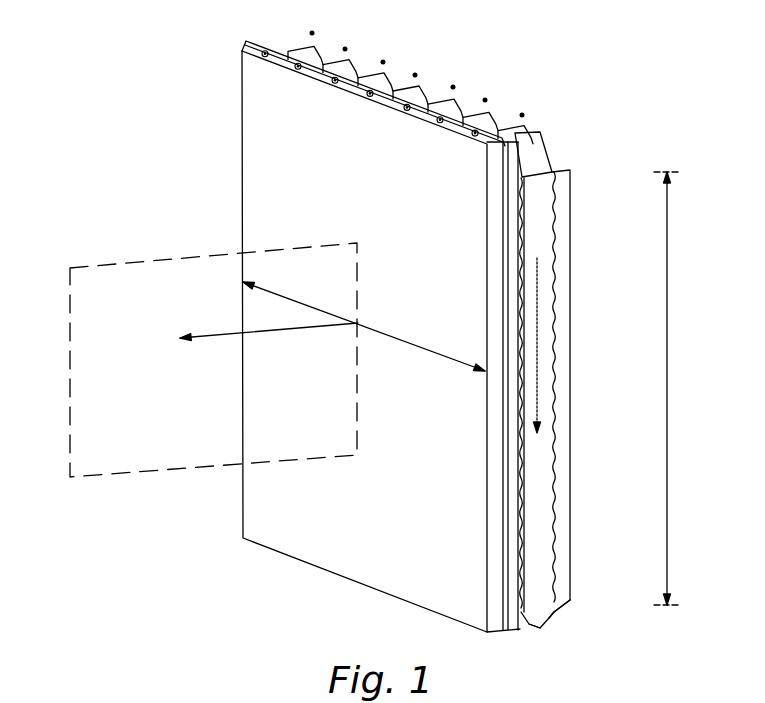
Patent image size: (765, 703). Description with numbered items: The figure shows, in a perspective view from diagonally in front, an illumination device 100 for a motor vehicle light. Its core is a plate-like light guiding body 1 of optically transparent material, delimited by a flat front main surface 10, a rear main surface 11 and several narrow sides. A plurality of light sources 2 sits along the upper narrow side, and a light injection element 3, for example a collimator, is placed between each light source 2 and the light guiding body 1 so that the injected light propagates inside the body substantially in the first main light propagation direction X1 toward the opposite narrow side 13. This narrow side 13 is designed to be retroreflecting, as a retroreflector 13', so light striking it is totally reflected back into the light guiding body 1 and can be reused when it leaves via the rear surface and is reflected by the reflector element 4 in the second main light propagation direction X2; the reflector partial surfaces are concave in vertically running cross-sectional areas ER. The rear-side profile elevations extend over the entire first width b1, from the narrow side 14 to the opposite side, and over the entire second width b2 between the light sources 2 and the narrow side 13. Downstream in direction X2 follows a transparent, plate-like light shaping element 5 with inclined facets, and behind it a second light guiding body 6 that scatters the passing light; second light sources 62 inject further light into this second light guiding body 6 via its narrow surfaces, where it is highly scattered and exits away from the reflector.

The illumination device 100 is at (177, 73).
The second light guiding body 6 is at (255, 516).
The second light sources 62 is at (244, 51).
The light sources 2 is at (312, 33).
The light injection element 3 is at (313, 50).
The front main surface 10 is at (523, 607).
The light shaping element 5 is at (512, 162).
The reflector element 4 is at (553, 180).
The light guiding body 1 is at (542, 230).
The rear main surface 11 is at (557, 538).
The narrow side 14 is at (558, 604).
The narrow side 13 is at (609, 628).
The retroreflector 13' is at (587, 650).
The cross-sectional areas ER is at (213, 252).
The first main light propagation direction X1 is at (540, 372).
The second main light propagation direction X2 is at (264, 356).
The first width b1 is at (413, 345).
The second width b2 is at (684, 388).